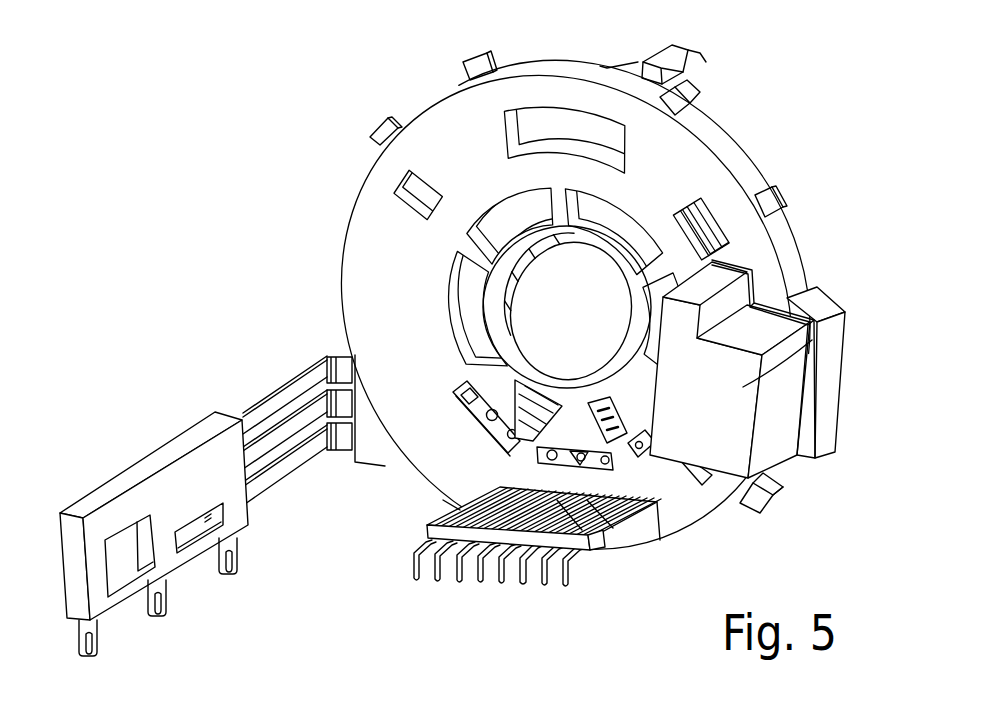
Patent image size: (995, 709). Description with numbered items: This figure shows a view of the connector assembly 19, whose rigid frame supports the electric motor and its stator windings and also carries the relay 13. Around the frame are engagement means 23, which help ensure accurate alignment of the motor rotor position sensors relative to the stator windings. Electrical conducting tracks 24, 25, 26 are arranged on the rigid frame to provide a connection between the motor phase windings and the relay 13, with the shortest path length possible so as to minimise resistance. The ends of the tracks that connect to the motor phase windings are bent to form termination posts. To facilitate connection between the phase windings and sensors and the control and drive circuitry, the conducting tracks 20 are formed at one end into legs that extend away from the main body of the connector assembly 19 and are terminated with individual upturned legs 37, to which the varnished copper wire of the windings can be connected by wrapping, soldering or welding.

The relay 13 is at (843, 311).
The connector assembly 19 is at (326, 194).
The conducting tracks 20 is at (622, 512).
The engagement means 23 is at (683, 62).
The track 24 is at (290, 395).
The track 25 is at (262, 448).
The track 26 is at (300, 465).
The terminal post 37 is at (220, 567).